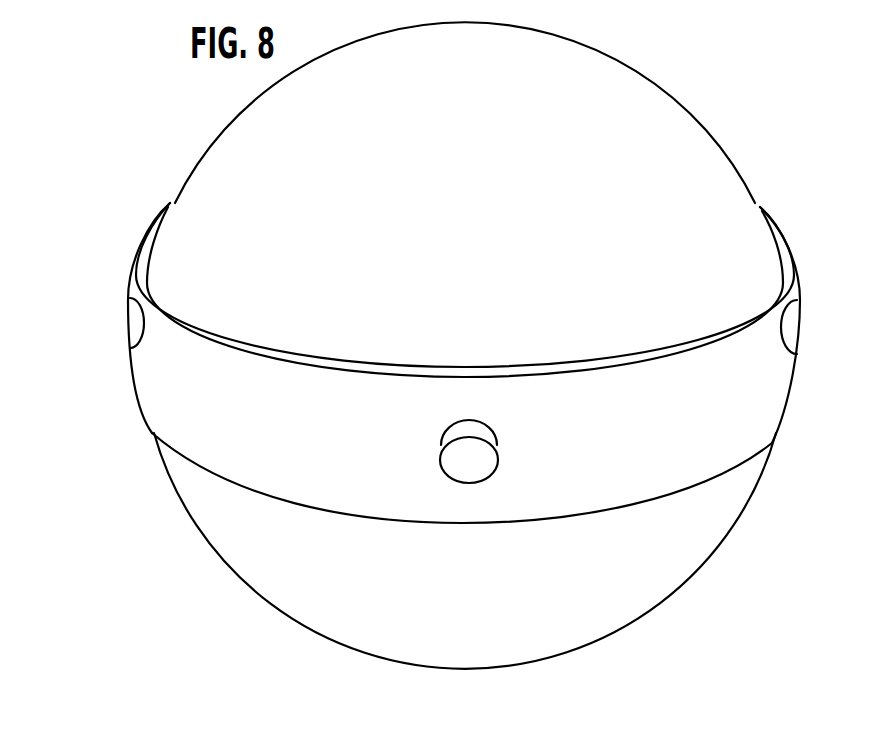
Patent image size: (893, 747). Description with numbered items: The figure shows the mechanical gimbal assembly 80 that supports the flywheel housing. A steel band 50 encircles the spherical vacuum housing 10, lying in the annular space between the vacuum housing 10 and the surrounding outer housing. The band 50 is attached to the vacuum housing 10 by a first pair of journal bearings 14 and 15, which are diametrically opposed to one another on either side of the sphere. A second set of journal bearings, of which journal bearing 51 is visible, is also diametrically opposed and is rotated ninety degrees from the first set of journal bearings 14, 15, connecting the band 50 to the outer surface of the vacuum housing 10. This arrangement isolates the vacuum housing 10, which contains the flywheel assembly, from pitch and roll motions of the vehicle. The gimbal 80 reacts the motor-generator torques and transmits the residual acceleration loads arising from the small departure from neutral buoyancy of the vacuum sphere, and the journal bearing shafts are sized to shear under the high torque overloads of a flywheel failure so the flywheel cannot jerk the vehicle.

The vacuum housing 10 is at (642, 72).
The journal bearing 14 is at (137, 322).
The journal bearing 15 is at (793, 318).
The steel band 50 is at (182, 405).
The journal bearing 51 is at (487, 455).
The mechanical gimbal assembly 80 is at (146, 142).